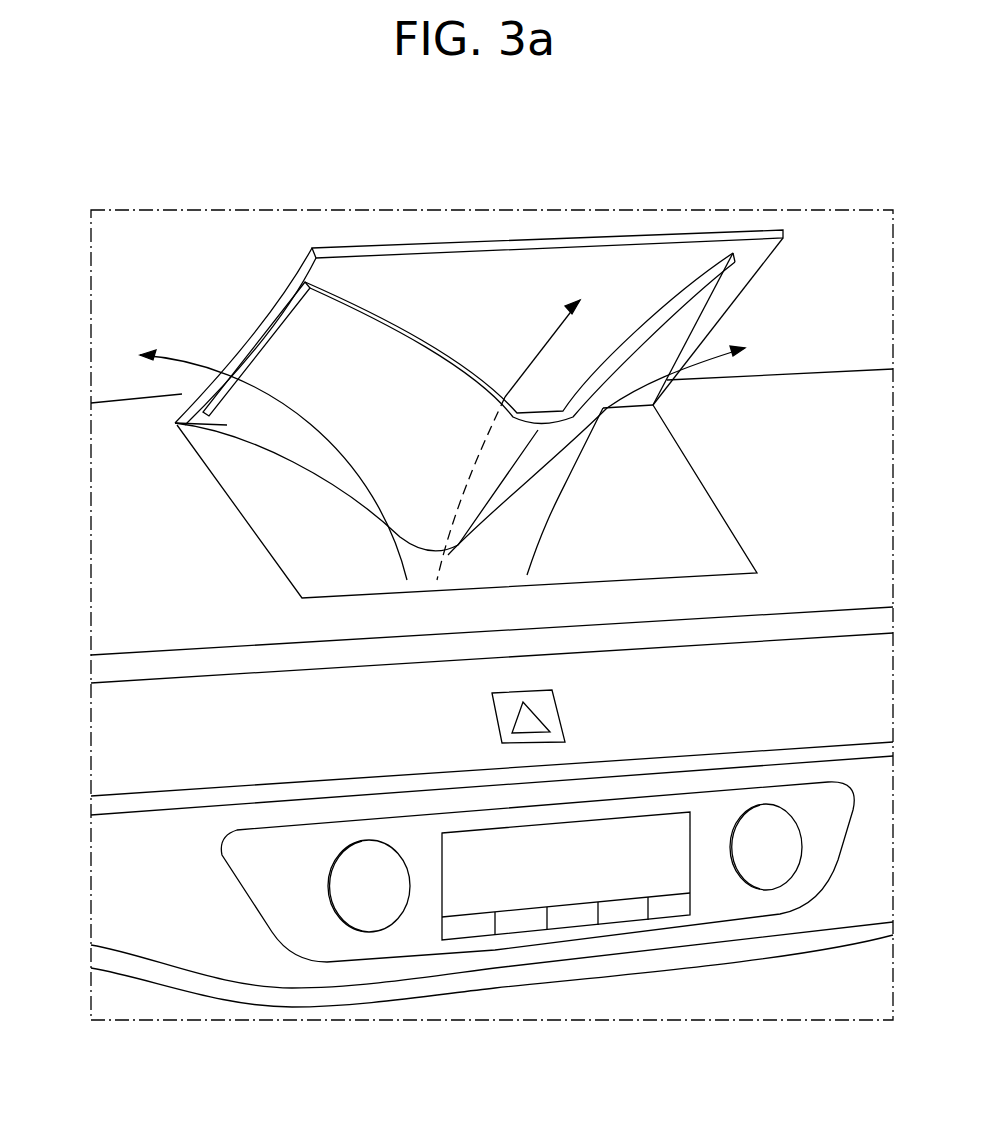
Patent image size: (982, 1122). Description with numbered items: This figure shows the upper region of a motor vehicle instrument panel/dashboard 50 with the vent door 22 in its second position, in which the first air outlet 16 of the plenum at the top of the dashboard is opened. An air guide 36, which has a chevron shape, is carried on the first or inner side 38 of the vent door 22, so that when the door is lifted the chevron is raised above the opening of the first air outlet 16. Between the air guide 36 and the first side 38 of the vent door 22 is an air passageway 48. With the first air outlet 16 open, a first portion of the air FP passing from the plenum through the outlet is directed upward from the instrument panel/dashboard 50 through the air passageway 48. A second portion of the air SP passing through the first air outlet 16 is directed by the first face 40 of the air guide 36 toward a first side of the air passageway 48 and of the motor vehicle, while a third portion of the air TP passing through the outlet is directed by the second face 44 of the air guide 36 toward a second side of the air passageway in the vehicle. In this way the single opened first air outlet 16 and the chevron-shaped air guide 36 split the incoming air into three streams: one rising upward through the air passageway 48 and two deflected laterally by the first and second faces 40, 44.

The first air outlet 16 is at (710, 480).
The vent door 22 is at (473, 242).
The air guide 36 is at (414, 419).
The first or inner side 38 is at (533, 263).
The first face 40 is at (332, 462).
The second face 44 is at (527, 480).
The air passageway 48 is at (613, 312).
The instrument panel/dashboard 50 is at (157, 545).
The first portion of the air FP is at (532, 353).
The second portion of the air SP is at (320, 430).
The third portion of the air TP is at (572, 470).